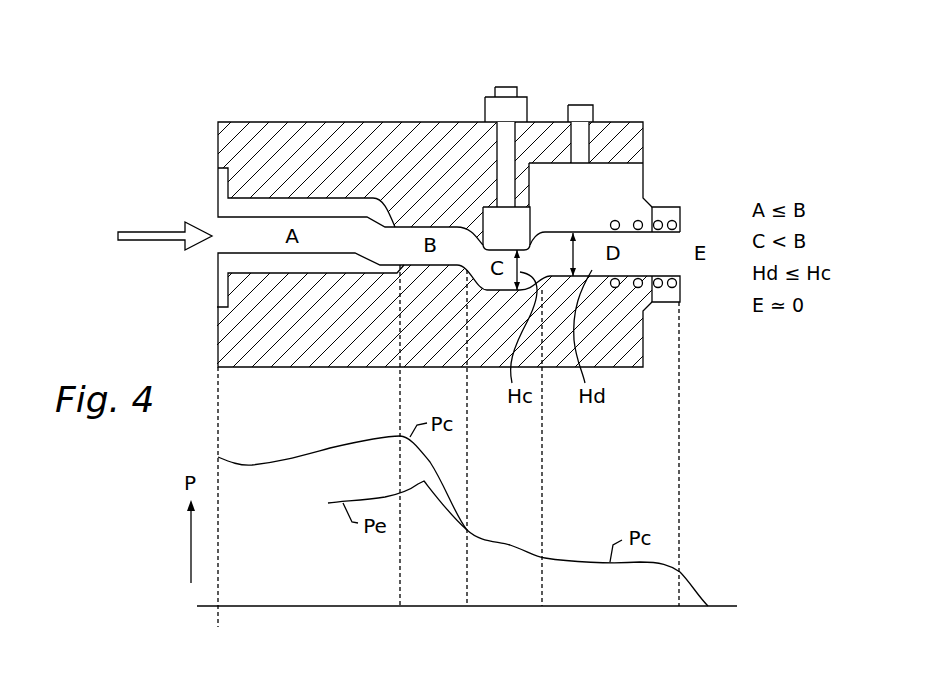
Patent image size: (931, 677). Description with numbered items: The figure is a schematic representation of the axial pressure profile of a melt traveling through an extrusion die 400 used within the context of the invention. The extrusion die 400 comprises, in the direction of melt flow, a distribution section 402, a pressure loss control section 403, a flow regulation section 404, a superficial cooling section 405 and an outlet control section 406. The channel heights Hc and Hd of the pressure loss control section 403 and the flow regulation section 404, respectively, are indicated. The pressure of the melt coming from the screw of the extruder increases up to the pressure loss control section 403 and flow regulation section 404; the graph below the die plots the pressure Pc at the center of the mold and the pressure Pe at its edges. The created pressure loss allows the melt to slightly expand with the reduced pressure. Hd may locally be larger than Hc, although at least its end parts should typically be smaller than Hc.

The extrusion die 400 is at (205, 113).
The distribution section 402 is at (330, 208).
The pressure loss control section 403 is at (450, 247).
The flow regulation section 404 is at (505, 248).
The superficial cooling section 405 is at (638, 221).
The outlet control section 406 is at (612, 187).